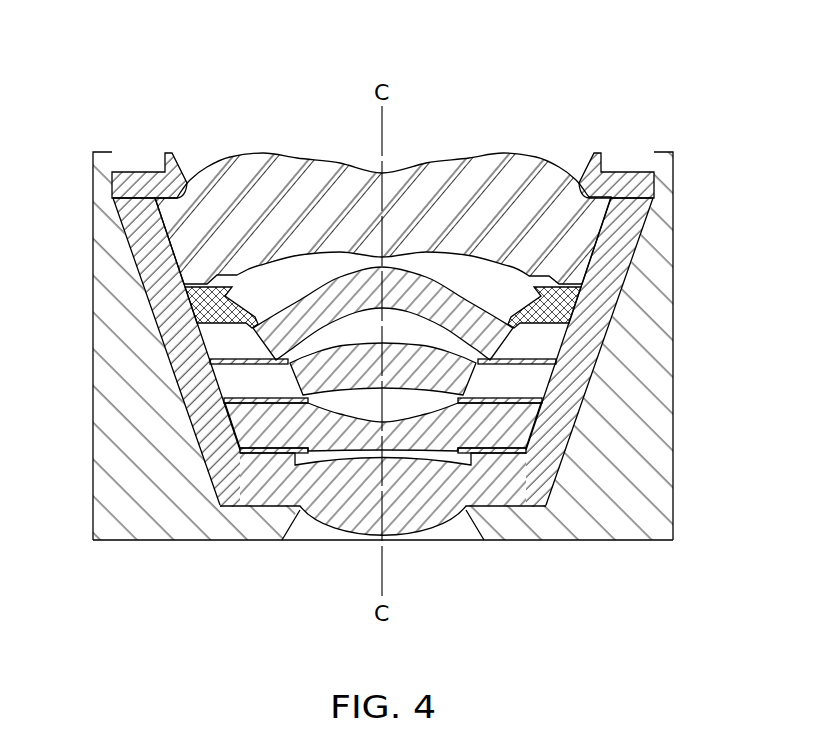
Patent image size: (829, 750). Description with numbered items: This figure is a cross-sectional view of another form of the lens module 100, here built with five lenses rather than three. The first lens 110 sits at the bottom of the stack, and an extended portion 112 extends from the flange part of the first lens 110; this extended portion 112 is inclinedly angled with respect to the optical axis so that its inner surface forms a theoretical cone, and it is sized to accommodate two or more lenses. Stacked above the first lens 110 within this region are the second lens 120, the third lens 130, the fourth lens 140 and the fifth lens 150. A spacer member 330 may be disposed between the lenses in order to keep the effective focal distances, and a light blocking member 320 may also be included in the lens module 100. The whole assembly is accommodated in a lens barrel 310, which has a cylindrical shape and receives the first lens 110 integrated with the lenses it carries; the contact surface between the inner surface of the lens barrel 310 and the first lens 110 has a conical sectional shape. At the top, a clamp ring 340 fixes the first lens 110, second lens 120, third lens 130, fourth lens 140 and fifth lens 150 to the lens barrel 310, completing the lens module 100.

The lens module 100 is at (683, 133).
The first lens 110 is at (519, 496).
The extended portion 112 is at (593, 315).
The second lens 120 is at (540, 422).
The third lens 130 is at (540, 380).
The fourth lens 140 is at (547, 343).
The fifth lens 150 is at (578, 230).
The lens barrel 310 is at (660, 487).
The light blocking member 320 is at (238, 454).
The spacer member 330 is at (580, 287).
The clamp ring 340 is at (617, 178).